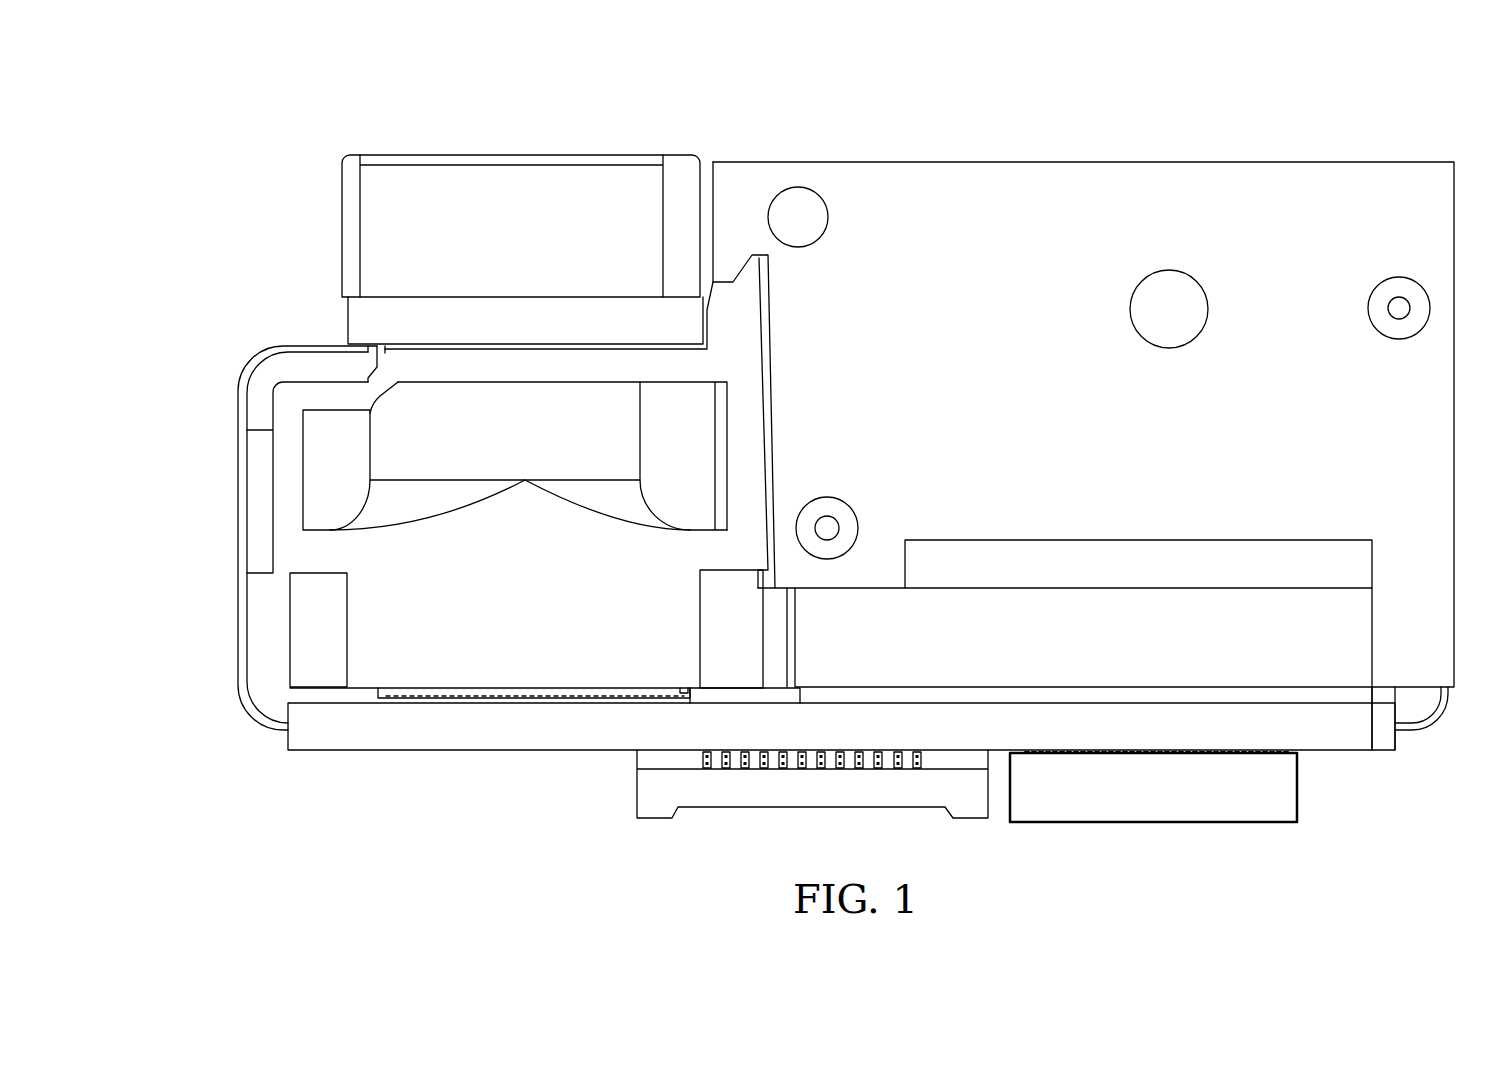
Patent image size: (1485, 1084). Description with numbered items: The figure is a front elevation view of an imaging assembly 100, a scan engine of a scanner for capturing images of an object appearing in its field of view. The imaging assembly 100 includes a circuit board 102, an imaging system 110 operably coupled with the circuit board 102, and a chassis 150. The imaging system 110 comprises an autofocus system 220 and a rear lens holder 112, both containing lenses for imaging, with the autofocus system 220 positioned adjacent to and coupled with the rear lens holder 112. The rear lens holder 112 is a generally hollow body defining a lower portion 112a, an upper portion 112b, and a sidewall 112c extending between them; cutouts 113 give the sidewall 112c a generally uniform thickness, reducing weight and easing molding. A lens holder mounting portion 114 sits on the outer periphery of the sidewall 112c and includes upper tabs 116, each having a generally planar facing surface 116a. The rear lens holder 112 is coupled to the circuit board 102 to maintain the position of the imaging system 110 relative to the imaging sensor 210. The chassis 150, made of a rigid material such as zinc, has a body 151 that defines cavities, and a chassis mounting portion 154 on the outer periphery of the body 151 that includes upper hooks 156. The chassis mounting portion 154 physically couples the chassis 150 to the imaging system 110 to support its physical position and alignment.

The imaging assembly 100 is at (277, 148).
The circuit board 102 is at (312, 737).
The imaging system 110 is at (205, 330).
The rear lens holder 112 is at (307, 632).
The lower portion 112a is at (288, 657).
The upper portion 112b is at (375, 398).
The sidewall 112c is at (302, 555).
The cutouts 113 is at (330, 478).
The lens holder mounting portion 114 is at (737, 315).
The upper tabs 116 is at (760, 267).
The facing surface 116a is at (764, 300).
The chassis 150 is at (1045, 172).
The body 151 is at (1158, 455).
The chassis mounting portion 154 is at (766, 199).
The upper hooks 156 is at (723, 260).
The imaging sensor 210 is at (411, 692).
The autofocus system 220 is at (621, 163).